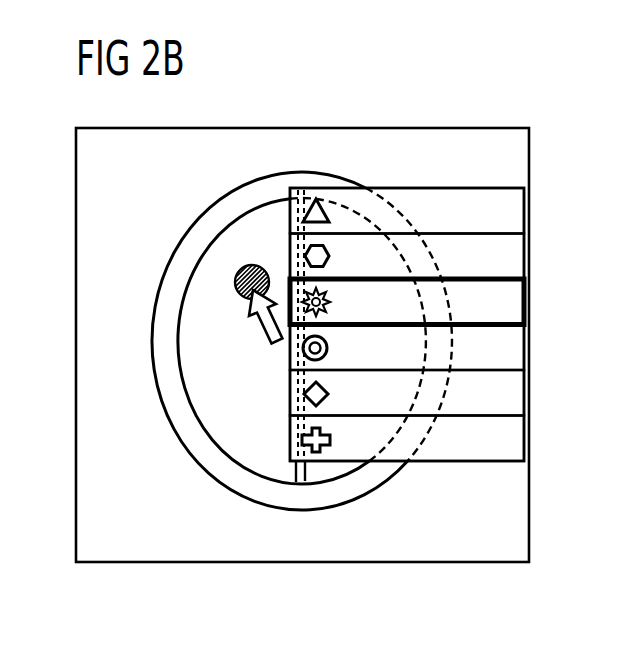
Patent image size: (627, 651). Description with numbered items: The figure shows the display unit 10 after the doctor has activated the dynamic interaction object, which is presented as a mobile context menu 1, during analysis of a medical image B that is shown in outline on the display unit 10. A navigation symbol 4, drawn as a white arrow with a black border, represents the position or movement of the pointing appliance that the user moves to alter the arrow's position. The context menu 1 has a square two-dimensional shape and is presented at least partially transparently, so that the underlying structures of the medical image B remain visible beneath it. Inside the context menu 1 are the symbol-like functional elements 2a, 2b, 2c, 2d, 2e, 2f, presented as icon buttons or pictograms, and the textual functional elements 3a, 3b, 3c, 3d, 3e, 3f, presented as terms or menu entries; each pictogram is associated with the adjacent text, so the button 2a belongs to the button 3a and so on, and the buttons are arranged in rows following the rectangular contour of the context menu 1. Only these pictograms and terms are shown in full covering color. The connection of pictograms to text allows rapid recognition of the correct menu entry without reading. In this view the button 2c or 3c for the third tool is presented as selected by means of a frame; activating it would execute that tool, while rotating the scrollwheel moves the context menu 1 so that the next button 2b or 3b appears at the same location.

The context menu 1 is at (473, 182).
The display unit 10 is at (322, 127).
The symbol-like functional element 2a is at (323, 205).
The symbol-like functional element 2b is at (329, 252).
The symbol-like functional element 2c is at (303, 350).
The symbol-like functional element 2d is at (304, 393).
The symbol-like functional element 2e is at (328, 394).
The symbol-like functional element 2f is at (323, 448).
The textual functional element 3a is at (470, 209).
The textual functional element 3b is at (470, 254).
The textual functional element 3c is at (470, 300).
The textual functional element 3d is at (470, 346).
The textual functional element 3e is at (470, 391).
The textual functional element 3f is at (470, 436).
The navigation symbol 4 is at (257, 322).
The medical image B is at (176, 432).